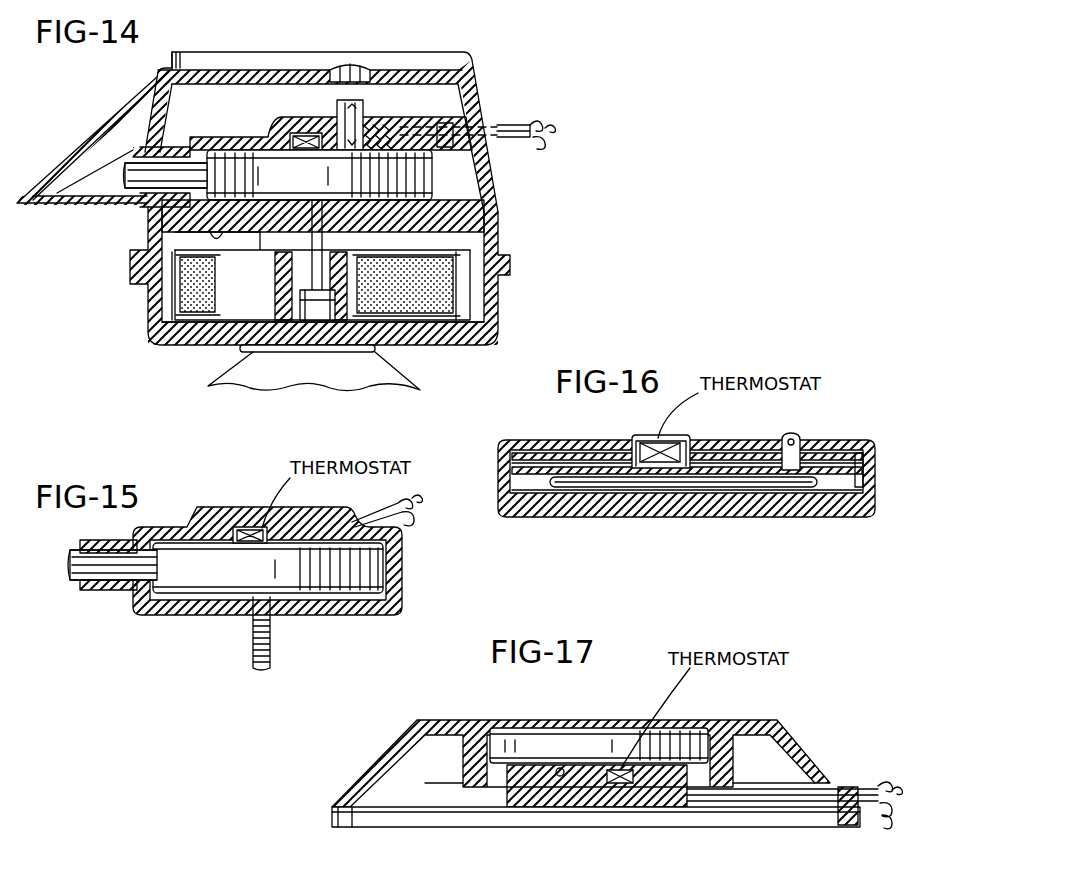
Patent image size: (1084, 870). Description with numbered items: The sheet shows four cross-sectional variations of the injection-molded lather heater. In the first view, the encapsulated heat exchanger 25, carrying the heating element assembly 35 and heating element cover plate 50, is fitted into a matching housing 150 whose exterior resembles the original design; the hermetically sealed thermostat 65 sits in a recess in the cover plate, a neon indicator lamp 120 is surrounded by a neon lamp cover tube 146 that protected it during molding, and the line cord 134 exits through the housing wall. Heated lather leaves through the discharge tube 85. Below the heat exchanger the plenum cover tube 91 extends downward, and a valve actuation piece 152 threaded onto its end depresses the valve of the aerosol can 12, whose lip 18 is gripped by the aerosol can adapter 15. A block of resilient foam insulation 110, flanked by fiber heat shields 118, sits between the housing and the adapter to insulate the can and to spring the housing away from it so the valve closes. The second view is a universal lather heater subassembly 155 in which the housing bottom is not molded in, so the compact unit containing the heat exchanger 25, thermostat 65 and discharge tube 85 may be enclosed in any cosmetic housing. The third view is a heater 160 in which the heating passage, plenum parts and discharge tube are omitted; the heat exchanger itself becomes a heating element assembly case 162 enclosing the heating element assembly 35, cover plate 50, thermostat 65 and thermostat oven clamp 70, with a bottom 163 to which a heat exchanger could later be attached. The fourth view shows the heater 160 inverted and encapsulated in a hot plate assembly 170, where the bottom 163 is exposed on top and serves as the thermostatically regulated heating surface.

In FIG. 14, the aerosol can 12 is at (348, 365).
In FIG. 14, the aerosol can adapter 15 is at (140, 298).
In FIG. 14, the lip 18 is at (287, 335).
In FIG. 14, the heat exchanger 25 is at (322, 188).
In FIG. 15, the heat exchanger 25 is at (305, 582).
In FIG. 16, the heating element assembly 35 is at (620, 496).
In FIG. 16, the heating element cover plate 50 is at (590, 450).
In FIG. 14, the thermostat 65 is at (303, 137).
In FIG. 15, the thermostat 65 is at (245, 527).
In FIG. 16, the thermostat 65 is at (665, 440).
In FIG. 17, the thermostat 65 is at (680, 773).
In FIG. 16, the thermostat oven clamp 70 is at (660, 435).
In FIG. 14, the discharge tube 85 is at (128, 170).
In FIG. 15, the discharge tube 85 is at (80, 560).
In FIG. 14, the plenum cover tube 91 is at (300, 226).
In FIG. 14, the resilient foam insulation 110 is at (455, 290).
In FIG. 14, the fiber heat shields 118 is at (165, 308).
In FIG. 14, the neon indicator lamp 120 is at (366, 125).
In FIG. 14, the line cord 134 is at (513, 138).
In FIG. 14, the neon lamp cover tube 146 is at (343, 125).
In FIG. 14, the housing 150 is at (490, 104).
In FIG. 14, the valve actuation piece 152 is at (210, 335).
In FIG. 15, the universal lather heater subassembly 155 is at (267, 506).
In FIG. 16, the heater 160 is at (553, 438).
In FIG. 17, the heater 160 is at (560, 745).
In FIG. 16, the heating element assembly case 162 is at (874, 488).
In FIG. 16, the bottom 163 is at (698, 518).
In FIG. 17, the bottom 163 is at (590, 722).
In FIG. 17, the hot plate assembly 170 is at (714, 712).